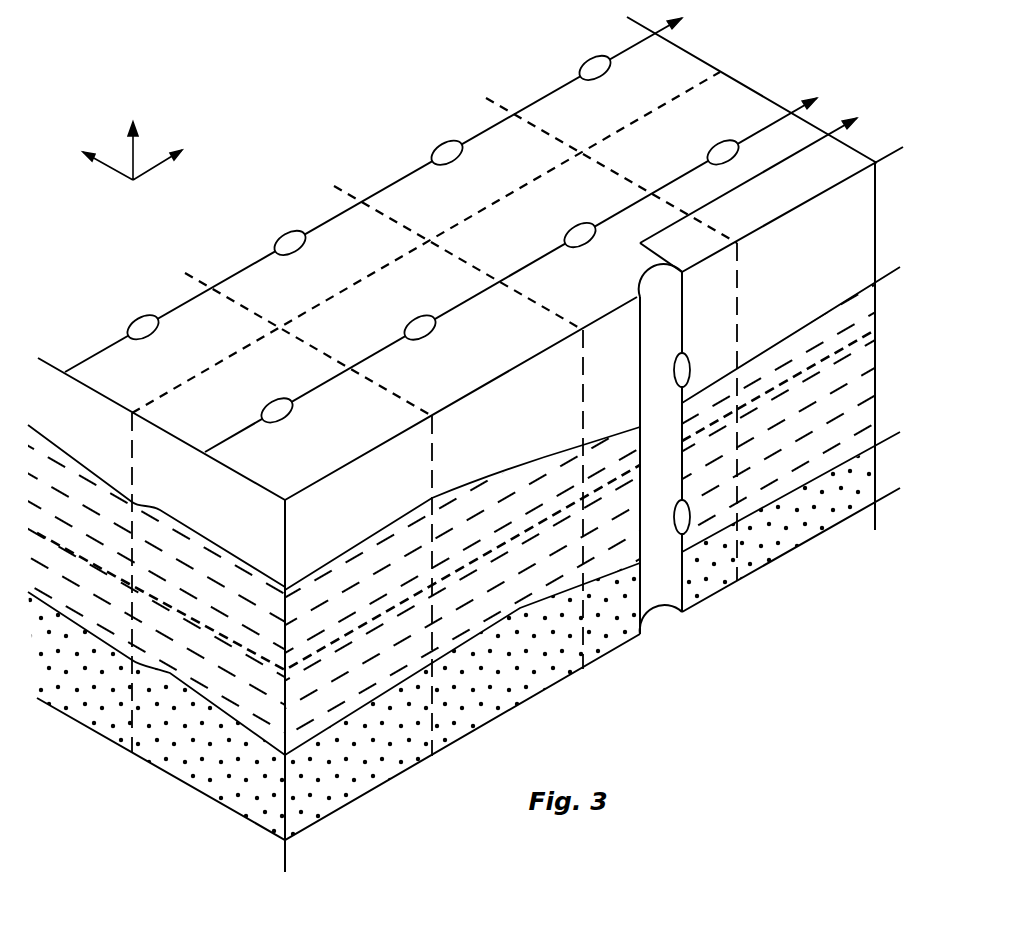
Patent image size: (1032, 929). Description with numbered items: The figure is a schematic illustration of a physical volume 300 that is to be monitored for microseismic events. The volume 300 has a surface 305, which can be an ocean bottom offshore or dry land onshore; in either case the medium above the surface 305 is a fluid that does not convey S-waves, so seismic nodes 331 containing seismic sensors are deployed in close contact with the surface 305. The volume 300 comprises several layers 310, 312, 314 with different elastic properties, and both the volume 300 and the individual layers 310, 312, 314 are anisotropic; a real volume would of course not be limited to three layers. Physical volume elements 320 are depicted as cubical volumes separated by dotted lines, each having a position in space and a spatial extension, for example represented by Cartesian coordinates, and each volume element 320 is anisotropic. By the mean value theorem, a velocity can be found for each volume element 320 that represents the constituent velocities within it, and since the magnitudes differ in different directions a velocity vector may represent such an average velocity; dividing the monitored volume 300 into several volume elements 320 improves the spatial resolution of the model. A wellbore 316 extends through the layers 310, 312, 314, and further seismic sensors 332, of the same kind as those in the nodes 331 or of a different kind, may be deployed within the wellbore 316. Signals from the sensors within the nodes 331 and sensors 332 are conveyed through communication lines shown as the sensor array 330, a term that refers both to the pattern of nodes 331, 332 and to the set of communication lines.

The physical volume 300 is at (252, 64).
The surface 305 is at (345, 235).
The layer 310 is at (870, 238).
The layer 312 is at (870, 367).
The layer 314 is at (820, 525).
The wellbore 316 is at (653, 580).
The physical volume element 320 is at (307, 440).
The sensor array 330 is at (757, 121).
The seismic node 331 is at (448, 146).
The seismic sensor 332 is at (690, 370).